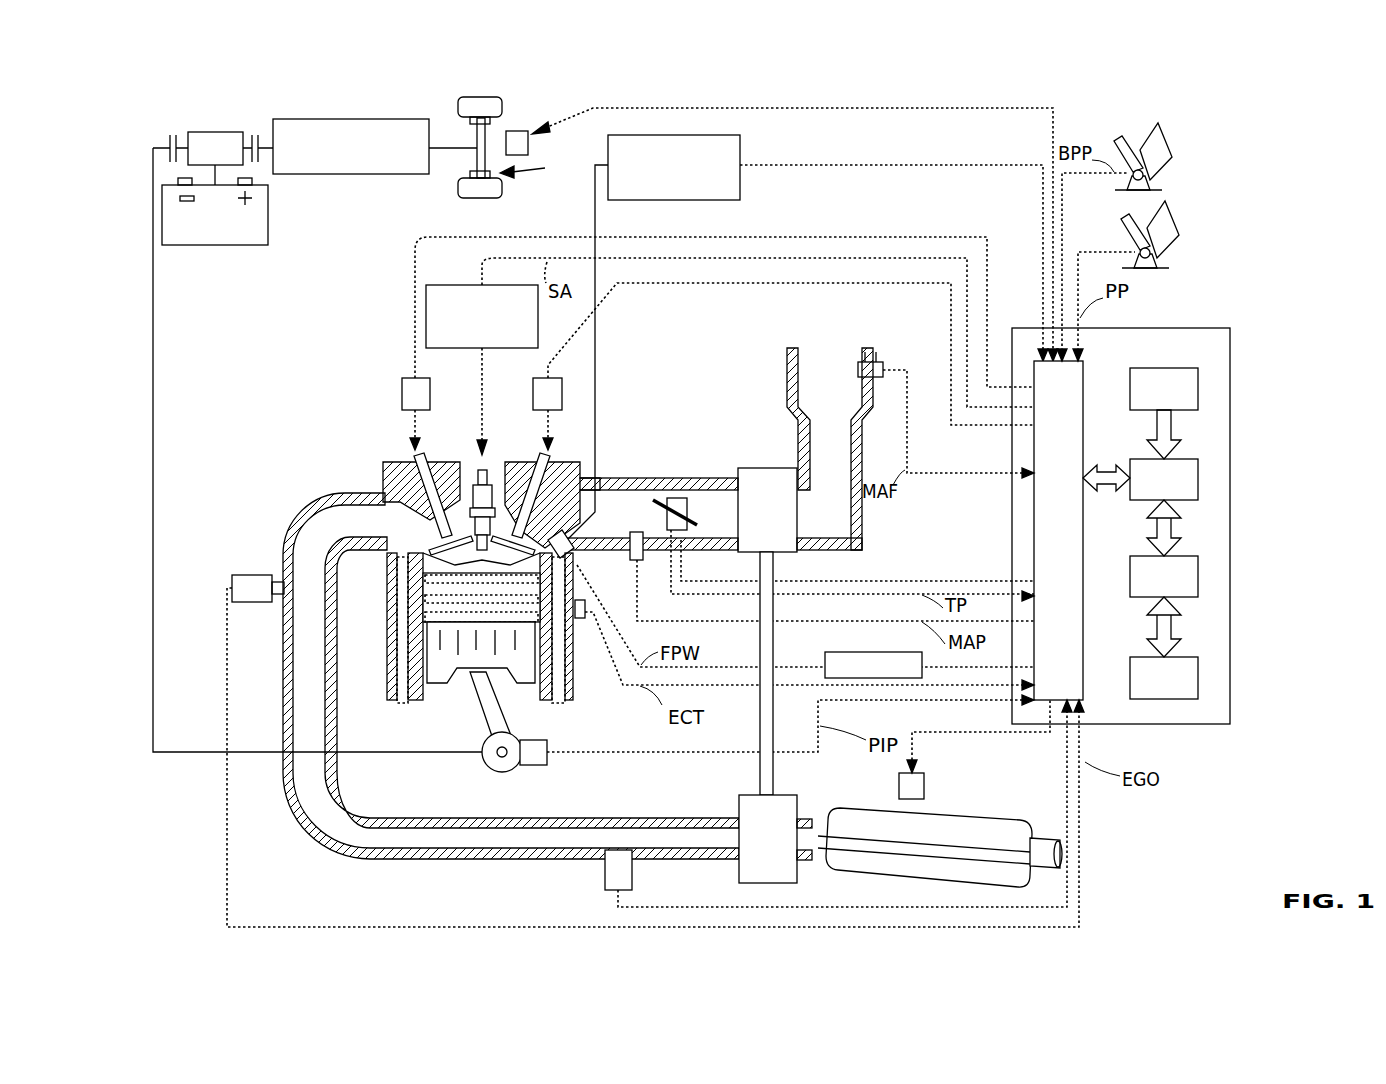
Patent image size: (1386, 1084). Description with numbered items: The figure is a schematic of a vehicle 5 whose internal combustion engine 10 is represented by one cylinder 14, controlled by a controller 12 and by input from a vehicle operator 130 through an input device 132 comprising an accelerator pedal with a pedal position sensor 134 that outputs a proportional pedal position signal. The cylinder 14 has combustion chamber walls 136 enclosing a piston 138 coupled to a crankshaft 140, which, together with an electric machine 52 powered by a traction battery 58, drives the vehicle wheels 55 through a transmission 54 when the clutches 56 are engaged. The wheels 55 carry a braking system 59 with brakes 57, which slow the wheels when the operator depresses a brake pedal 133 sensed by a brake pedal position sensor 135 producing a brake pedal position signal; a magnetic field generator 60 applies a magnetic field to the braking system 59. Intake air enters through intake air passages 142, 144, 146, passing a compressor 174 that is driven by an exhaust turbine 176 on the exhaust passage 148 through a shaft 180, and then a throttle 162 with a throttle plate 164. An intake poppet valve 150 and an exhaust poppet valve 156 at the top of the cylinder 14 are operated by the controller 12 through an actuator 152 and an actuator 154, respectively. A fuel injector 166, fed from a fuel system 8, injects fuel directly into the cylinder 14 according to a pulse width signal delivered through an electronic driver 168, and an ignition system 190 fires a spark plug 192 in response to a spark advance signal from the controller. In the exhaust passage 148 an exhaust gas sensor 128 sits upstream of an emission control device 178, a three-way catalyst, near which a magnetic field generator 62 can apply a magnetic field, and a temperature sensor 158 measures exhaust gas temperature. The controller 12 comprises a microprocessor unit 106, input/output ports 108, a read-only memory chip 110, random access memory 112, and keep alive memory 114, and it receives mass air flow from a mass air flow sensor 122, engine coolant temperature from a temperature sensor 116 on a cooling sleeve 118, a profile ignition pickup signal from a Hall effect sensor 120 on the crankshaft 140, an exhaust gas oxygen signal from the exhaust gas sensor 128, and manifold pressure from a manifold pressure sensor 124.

The vehicle 5 is at (1282, 157).
The fuel system 8 is at (708, 135).
The internal combustion engine 10 is at (312, 412).
The controller 12 is at (1230, 332).
The cylinder 14 is at (390, 580).
The electric machine 52 is at (208, 132).
The transmission 54 is at (408, 174).
The vehicle wheels 55 is at (460, 104).
The clutches 56 is at (170, 135).
The brakes 57 is at (492, 128).
The traction battery 58 is at (215, 245).
The braking system 59 is at (529, 179).
The magnetic field generator 60 is at (530, 150).
The magnetic field generator 62 is at (924, 790).
The microprocessor unit 106 is at (1198, 472).
The input/output ports 108 is at (1083, 368).
The read-only memory chip 110 is at (1198, 380).
The random access memory 112 is at (1198, 568).
The keep alive memory 114 is at (1198, 668).
The temperature sensor 116 is at (583, 618).
The cooling sleeve 118 is at (575, 665).
The Hall effect sensor 120 is at (540, 765).
The mass air flow sensor 122 is at (878, 362).
The MAP sensor 124 is at (640, 562).
The exhaust gas sensor 128 is at (232, 578).
The vehicle operator 130 is at (1172, 140).
The input device 132 is at (1125, 228).
The brake pedal 133 is at (1118, 150).
The pedal position sensor 134 is at (1158, 254).
The brake pedal position sensor 135 is at (1150, 176).
The combustion chamber walls 136 is at (425, 700).
The piston 138 is at (468, 660).
The crankshaft 140 is at (488, 770).
The intake air passage 142 is at (849, 393).
The intake air passage 144 is at (729, 523).
The intake air passage 146 is at (649, 523).
The exhaust passage 148 is at (372, 530).
The intake poppet valve 150 is at (528, 505).
The actuator 152 is at (533, 390).
The actuator 154 is at (402, 385).
The exhaust poppet valve 156 is at (418, 505).
The temperature sensor 158 is at (604, 880).
The throttle 162 is at (688, 498).
The throttle plate 164 is at (660, 500).
The fuel injector 166 is at (538, 540).
The electronic driver 168 is at (825, 655).
The compressor 174 is at (781, 520).
The exhaust turbine 176 is at (781, 848).
The emission control device 178 is at (998, 810).
The shaft 180 is at (775, 762).
The ignition system 190 is at (440, 285).
The spark plug 192 is at (478, 472).